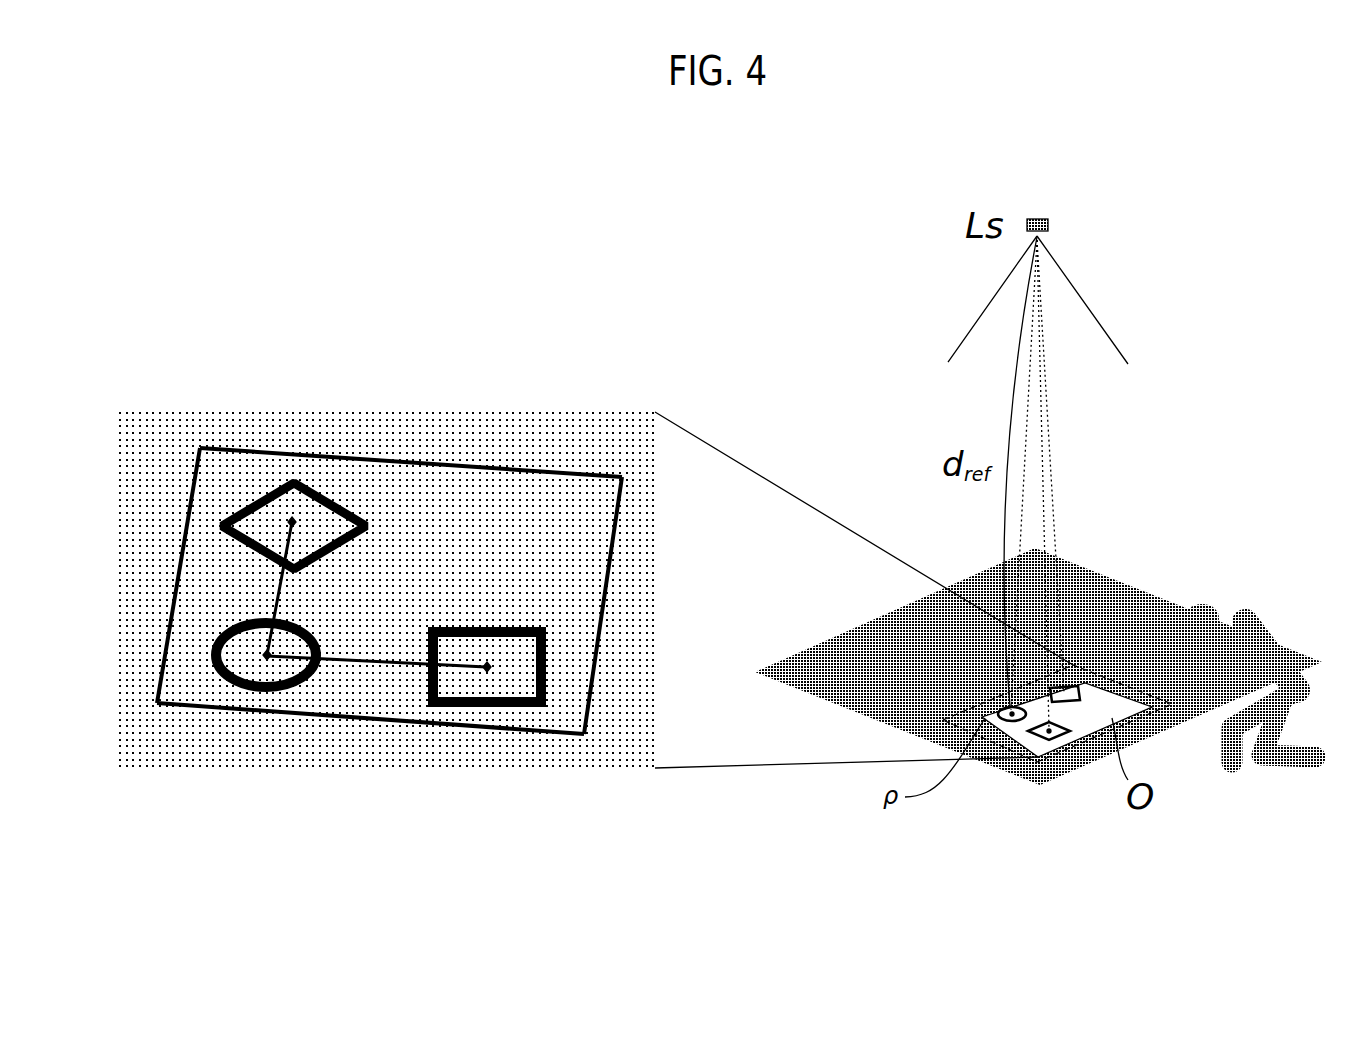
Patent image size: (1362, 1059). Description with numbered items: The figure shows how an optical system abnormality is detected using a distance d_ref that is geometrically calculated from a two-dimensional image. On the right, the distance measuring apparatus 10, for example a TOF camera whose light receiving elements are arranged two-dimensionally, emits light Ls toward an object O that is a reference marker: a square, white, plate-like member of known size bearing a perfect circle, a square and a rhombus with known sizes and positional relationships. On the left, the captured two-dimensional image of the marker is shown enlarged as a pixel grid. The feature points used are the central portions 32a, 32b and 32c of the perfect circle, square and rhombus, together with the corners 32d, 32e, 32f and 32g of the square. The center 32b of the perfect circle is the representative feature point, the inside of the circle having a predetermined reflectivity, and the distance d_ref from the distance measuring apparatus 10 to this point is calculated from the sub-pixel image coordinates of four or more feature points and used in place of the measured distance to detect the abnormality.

The distance measuring apparatus 10 is at (1044, 219).
The central portion of the perfect circle 32a is at (292, 522).
The center of the perfect circle 32b is at (267, 655).
The central portion of the rhombus 32c is at (487, 667).
The corner of the square 32d is at (199, 447).
The corner of the square 32e is at (158, 704).
The corner of the square 32f is at (584, 734).
The corner of the square 32g is at (622, 477).